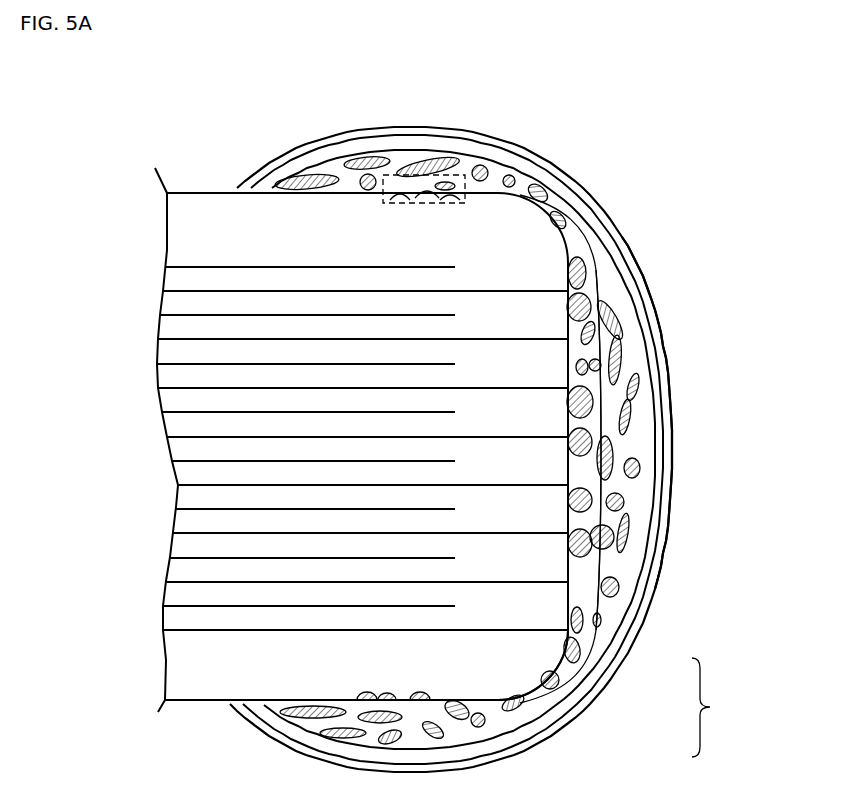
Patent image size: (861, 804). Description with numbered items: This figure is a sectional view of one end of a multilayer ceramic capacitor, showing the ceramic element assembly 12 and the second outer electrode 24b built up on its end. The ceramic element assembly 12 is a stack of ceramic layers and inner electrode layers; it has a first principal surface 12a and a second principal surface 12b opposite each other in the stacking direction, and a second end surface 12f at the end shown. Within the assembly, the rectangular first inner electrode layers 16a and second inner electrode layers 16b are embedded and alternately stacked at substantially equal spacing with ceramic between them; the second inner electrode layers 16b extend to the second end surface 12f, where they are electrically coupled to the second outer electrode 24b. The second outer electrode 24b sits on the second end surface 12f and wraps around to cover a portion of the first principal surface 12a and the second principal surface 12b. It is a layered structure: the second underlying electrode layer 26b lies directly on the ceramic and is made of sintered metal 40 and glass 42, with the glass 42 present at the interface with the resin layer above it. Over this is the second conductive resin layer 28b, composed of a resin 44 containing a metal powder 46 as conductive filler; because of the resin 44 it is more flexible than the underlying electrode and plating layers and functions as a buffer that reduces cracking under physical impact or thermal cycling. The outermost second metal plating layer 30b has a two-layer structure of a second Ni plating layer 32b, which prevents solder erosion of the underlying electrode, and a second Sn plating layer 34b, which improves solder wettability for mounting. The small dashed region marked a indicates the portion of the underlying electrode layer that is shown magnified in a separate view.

The ceramic element assembly 12 is at (183, 186).
The first principal surface 12a is at (215, 193).
The second principal surface 12b is at (190, 702).
The second end surface 12f is at (572, 592).
The first inner electrode layers 16a is at (197, 266).
The second inner electrode layers 16b is at (190, 291).
The a-portion a is at (466, 170).
The second outer electrode 24b is at (574, 170).
The second underlying electrode layer 26b is at (590, 433).
The second conductive resin layer 28b is at (642, 418).
The second metal plating layer 30b is at (727, 707).
The second Ni plating layer 32b is at (593, 670).
The second Sn plating layer 34b is at (583, 707).
The sintered metal 40 is at (580, 525).
The glass 42 is at (580, 570).
The resin 44 is at (615, 293).
The metal powder 46 is at (632, 380).